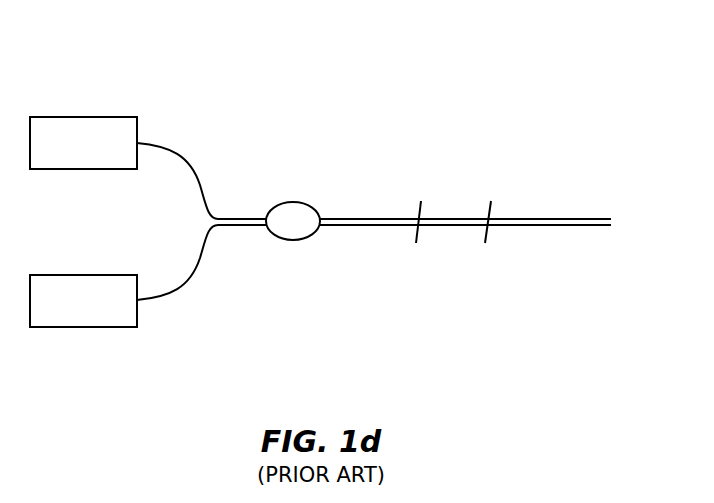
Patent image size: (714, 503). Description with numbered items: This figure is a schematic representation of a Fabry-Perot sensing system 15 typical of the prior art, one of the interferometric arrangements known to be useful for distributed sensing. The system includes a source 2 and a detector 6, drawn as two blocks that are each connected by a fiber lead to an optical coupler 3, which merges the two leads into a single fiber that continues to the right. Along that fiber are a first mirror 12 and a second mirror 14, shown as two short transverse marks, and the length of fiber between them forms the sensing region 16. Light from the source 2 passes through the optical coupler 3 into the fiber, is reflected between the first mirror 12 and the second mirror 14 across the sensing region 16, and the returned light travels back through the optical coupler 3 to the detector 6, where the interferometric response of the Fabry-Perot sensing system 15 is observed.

The Fabry-Perot sensing system 15 is at (257, 86).
The detector 6 is at (54, 117).
The source 2 is at (52, 327).
The optical coupler 3 is at (290, 240).
The sensing region 16 is at (459, 231).
The first mirror 12 is at (415, 235).
The second mirror 14 is at (490, 211).